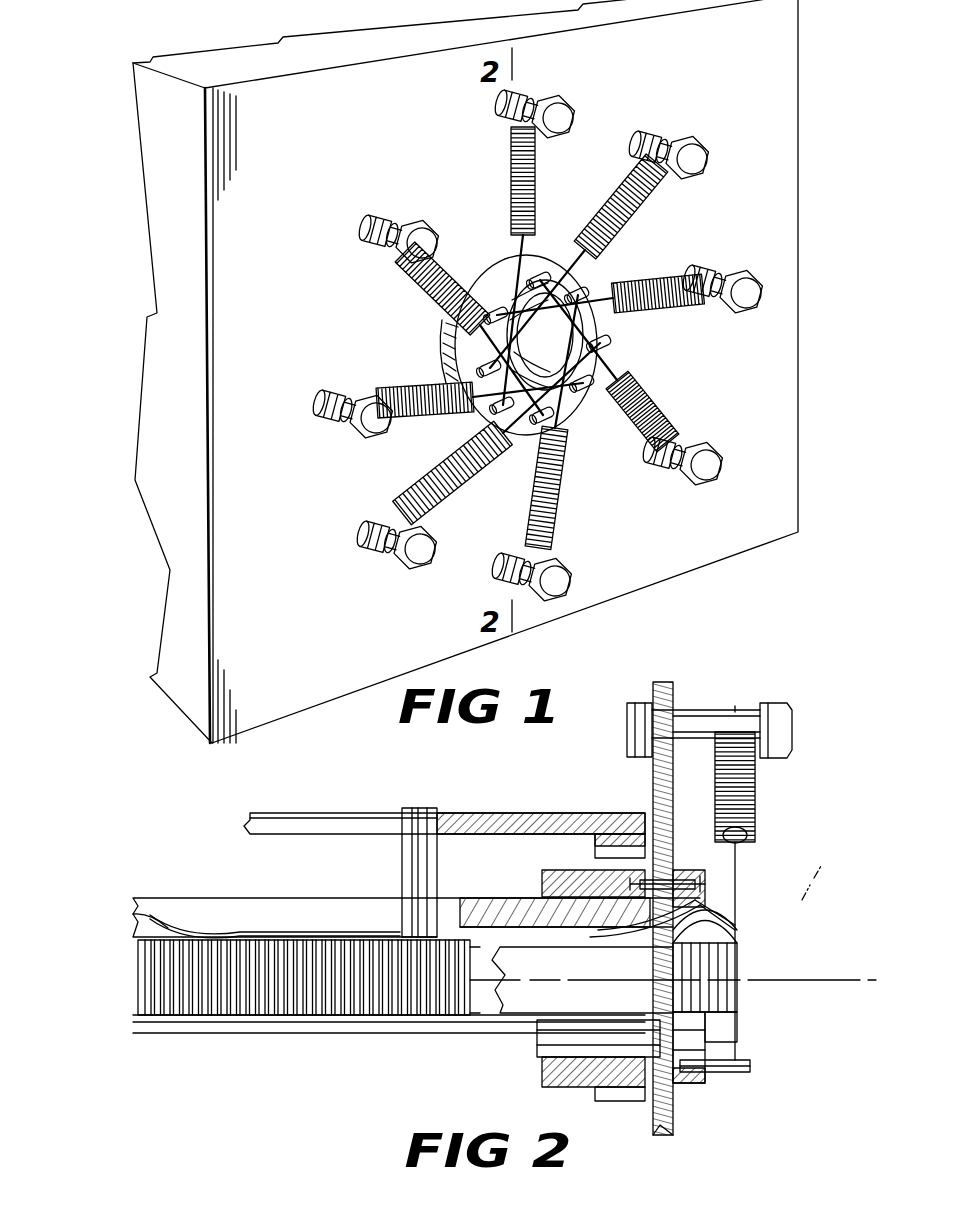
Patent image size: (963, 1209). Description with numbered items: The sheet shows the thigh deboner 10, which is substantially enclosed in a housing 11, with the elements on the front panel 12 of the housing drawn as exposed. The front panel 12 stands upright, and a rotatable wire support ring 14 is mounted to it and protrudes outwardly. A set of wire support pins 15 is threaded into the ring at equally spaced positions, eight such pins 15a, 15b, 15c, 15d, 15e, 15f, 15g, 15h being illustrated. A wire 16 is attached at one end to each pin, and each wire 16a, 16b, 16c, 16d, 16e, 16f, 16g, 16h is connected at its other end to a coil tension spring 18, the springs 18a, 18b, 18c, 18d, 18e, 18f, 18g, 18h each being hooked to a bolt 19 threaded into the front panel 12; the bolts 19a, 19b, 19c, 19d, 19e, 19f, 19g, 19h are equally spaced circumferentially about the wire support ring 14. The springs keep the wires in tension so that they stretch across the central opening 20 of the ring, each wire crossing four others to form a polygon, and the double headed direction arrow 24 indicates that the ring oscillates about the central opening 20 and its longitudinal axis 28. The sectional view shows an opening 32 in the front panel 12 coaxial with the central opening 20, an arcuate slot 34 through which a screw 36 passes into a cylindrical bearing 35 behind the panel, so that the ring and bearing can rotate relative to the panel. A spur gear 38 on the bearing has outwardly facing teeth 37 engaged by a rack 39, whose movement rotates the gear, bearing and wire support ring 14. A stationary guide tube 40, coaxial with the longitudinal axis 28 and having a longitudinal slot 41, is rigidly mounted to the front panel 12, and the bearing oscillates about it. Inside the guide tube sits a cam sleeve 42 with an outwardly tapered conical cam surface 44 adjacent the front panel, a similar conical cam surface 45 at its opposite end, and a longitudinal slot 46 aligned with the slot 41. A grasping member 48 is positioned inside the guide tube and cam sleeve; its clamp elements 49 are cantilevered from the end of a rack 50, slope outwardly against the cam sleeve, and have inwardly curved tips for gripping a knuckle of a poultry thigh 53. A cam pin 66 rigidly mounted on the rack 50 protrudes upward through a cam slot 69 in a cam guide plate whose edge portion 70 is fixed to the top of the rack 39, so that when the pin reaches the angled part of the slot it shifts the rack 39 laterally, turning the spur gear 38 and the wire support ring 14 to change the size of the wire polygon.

In FIG. 1, the thigh deboner 10 is at (815, 130).
In FIG. 2, the thigh deboner 10 is at (818, 758).
In FIG. 1, the housing 11 is at (188, 705).
In FIG. 1, the front panel 12 is at (762, 540).
In FIG. 2, the front panel 12 is at (665, 692).
In FIG. 1, the wire support ring 14 is at (452, 312).
In FIG. 2, the wire support ring 14 is at (740, 895).
In FIG. 2, the wire support pin 15 is at (720, 1074).
In FIG. 1, the wire support pin 15a is at (478, 366).
In FIG. 1, the wire support pin 15b is at (500, 305).
In FIG. 1, the wire support pin 15c is at (548, 270).
In FIG. 1, the wire support pin 15d is at (583, 290).
In FIG. 1, the wire support pin 15e is at (606, 340).
In FIG. 1, the wire support pin 15f is at (588, 390).
In FIG. 1, the wire support pin 15g is at (540, 425).
In FIG. 1, the wire support pin 15h is at (495, 410).
In FIG. 2, the wire 16 is at (742, 868).
In FIG. 1, the wire 16a is at (600, 252).
In FIG. 1, the wire 16b is at (612, 292).
In FIG. 1, the wire 16c is at (610, 370).
In FIG. 1, the wire 16d is at (560, 438).
In FIG. 1, the wire 16e is at (512, 440).
In FIG. 1, the wire 16f is at (470, 400).
In FIG. 1, the wire 16g is at (488, 305).
In FIG. 1, the wire 16h is at (526, 260).
In FIG. 2, the coil tension spring 18 is at (756, 810).
In FIG. 1, the coil tension spring 18a is at (625, 185).
In FIG. 1, the coil tension spring 18b is at (707, 275).
In FIG. 1, the coil tension spring 18c is at (650, 425).
In FIG. 1, the coil tension spring 18d is at (556, 510).
In FIG. 1, the coil tension spring 18e is at (455, 500).
In FIG. 1, the coil tension spring 18f is at (405, 418).
In FIG. 1, the coil tension spring 18g is at (448, 262).
In FIG. 1, the coil tension spring 18h is at (510, 150).
In FIG. 2, the bolt 19 is at (700, 716).
In FIG. 1, the bolt 19a is at (708, 144).
In FIG. 1, the bolt 19b is at (760, 280).
In FIG. 1, the bolt 19c is at (718, 448).
In FIG. 1, the bolt 19d is at (568, 575).
In FIG. 1, the bolt 19e is at (420, 562).
In FIG. 1, the bolt 19f is at (370, 440).
In FIG. 1, the bolt 19g is at (410, 258).
In FIG. 1, the bolt 19h is at (566, 104).
In FIG. 2, the central opening 20 is at (708, 1030).
In FIG. 1, the double headed direction arrow 24 is at (440, 345).
In FIG. 2, the longitudinal axis 28 is at (805, 980).
In FIG. 2, the opening 32 is at (665, 1025).
In FIG. 2, the arcuate slot 34 is at (660, 876).
In FIG. 2, the cylindrical bearing 35 is at (540, 884).
In FIG. 2, the screw 36 is at (698, 878).
In FIG. 2, the outwardly facing teeth 37 is at (635, 1101).
In FIG. 2, the spur gear 38 is at (650, 870).
In FIG. 2, the rack 39 is at (594, 845).
In FIG. 2, the guide tube 40 is at (300, 898).
In FIG. 2, the longitudinal slot 41 is at (440, 1026).
In FIG. 2, the cam sleeve 42 is at (240, 912).
In FIG. 2, the conical cam surface 44 is at (650, 932).
In FIG. 2, the conical cam surface 45 is at (150, 912).
In FIG. 2, the longitudinal slot 46 is at (375, 1016).
In FIG. 1, the grasping member 48 is at (525, 354).
In FIG. 2, the grasping member 48 is at (525, 1010).
In FIG. 2, the clamp element 49 is at (745, 922).
In FIG. 2, the rack 50 is at (265, 1016).
In FIG. 2, the poultry thigh 53 is at (822, 876).
In FIG. 2, the cam pin 66 is at (404, 850).
In FIG. 2, the cam slot 69 is at (440, 810).
In FIG. 2, the edge portion 70 is at (575, 813).